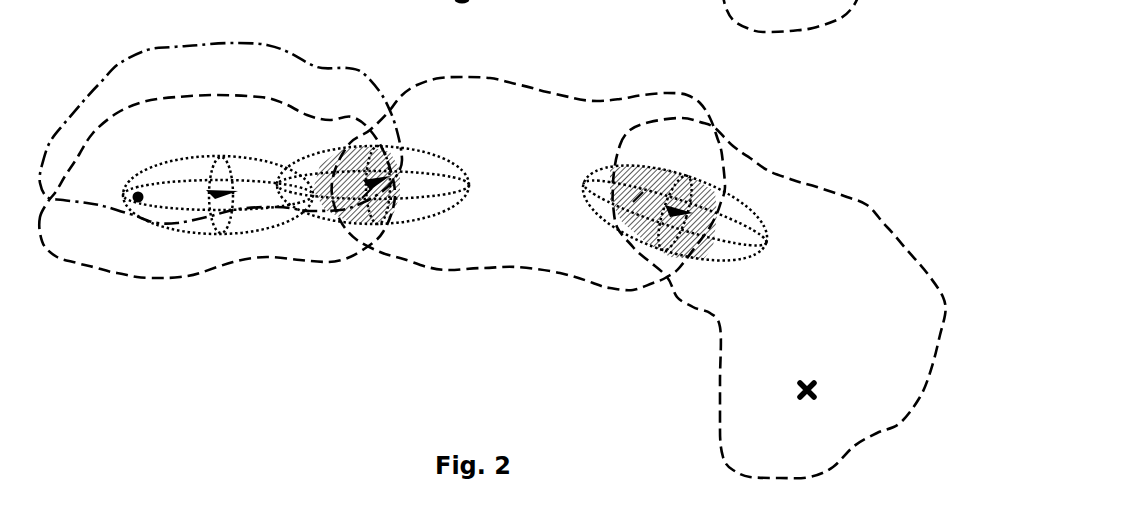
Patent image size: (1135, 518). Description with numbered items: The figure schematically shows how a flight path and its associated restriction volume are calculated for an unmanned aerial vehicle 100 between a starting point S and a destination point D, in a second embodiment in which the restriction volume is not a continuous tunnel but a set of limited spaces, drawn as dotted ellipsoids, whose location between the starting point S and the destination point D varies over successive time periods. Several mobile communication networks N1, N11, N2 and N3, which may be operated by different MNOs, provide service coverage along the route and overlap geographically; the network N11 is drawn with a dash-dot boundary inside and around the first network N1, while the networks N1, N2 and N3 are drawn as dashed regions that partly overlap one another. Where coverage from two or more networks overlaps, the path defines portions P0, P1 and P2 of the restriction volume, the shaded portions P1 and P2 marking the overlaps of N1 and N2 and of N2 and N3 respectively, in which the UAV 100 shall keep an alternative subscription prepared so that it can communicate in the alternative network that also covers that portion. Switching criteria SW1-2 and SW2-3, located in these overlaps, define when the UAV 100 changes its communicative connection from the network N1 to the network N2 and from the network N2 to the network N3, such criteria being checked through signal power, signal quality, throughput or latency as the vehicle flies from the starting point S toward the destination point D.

The mobile communication network N11 is at (152, 50).
The portion of the restriction volume P0 is at (233, 70).
The starting point S is at (122, 203).
The destination point D is at (812, 407).
The switching criterion SW1-2 is at (367, 193).
The switching criterion SW2-3 is at (638, 197).
The mobile communication network N1 is at (122, 270).
The mobile communication network N2 is at (547, 270).
The mobile communication network N3 is at (817, 187).
The unmanned aerial vehicle 100 is at (218, 197).
The portion of the restriction volume P1 is at (340, 203).
The portion of the restriction volume P2 is at (643, 222).